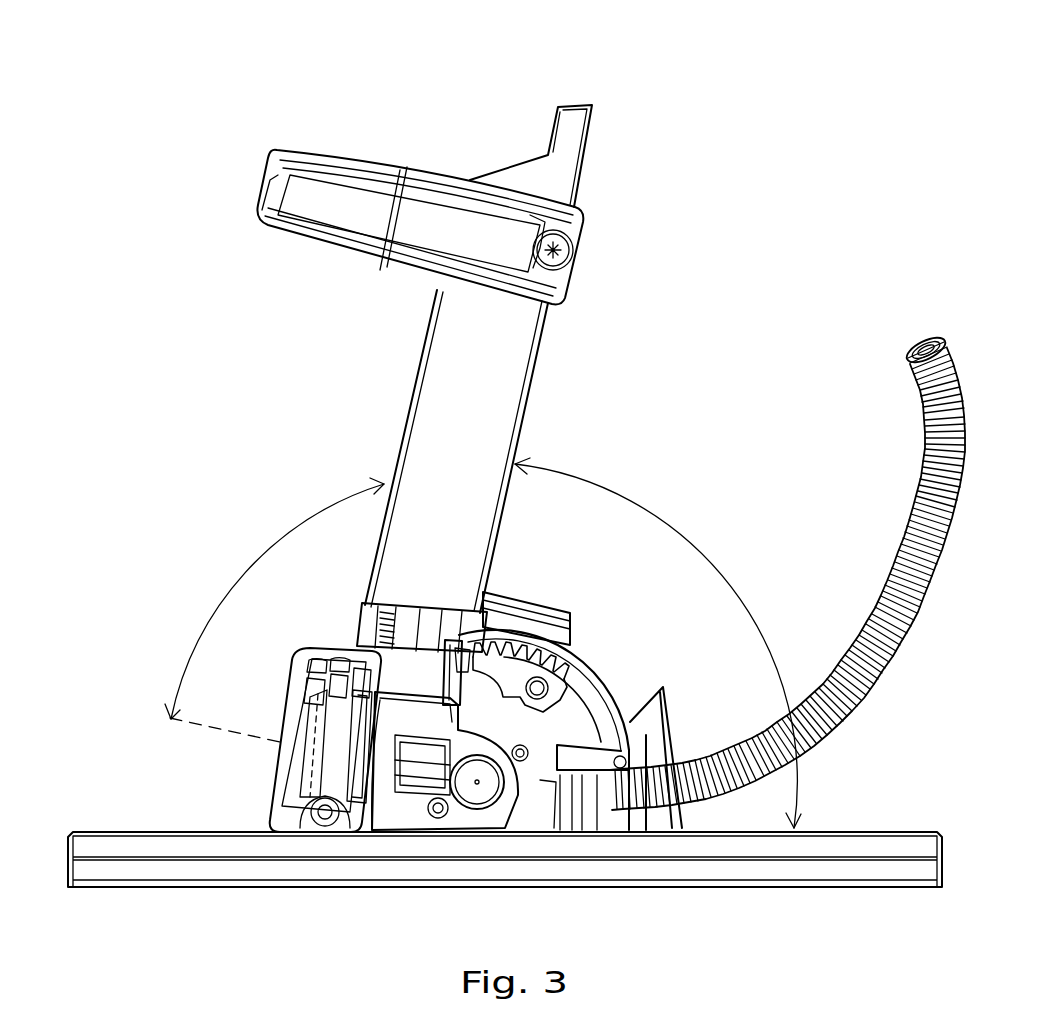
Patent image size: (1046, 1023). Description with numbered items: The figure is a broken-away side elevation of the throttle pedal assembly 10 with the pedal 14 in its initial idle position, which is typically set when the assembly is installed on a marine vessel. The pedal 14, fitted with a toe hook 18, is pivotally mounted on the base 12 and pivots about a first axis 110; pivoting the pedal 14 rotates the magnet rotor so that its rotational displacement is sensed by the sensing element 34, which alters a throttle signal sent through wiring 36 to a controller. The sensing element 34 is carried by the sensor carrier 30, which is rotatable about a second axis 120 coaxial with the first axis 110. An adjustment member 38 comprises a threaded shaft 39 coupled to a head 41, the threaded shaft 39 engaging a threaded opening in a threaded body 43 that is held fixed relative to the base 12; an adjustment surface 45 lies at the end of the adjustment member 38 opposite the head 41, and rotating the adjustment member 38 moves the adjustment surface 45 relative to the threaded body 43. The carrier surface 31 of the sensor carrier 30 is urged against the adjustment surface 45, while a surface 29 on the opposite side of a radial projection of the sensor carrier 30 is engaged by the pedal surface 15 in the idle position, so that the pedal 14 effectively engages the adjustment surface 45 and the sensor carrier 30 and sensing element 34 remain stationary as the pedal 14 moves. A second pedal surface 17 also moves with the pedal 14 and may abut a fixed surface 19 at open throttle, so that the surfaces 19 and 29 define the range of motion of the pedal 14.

The throttle pedal assembly 10 is at (102, 267).
The base 12 is at (130, 828).
The pedal 14 is at (400, 440).
The pedal surface 15 is at (405, 705).
The pedal surface 17 is at (580, 688).
The toe hook 18 is at (365, 155).
The surface 19 is at (552, 745).
The surface of the sensor carrier 29 is at (560, 625).
The sensor carrier 30 is at (468, 805).
The carrier surface 31 is at (390, 668).
The sensing element 34 is at (440, 815).
The wiring 36 is at (918, 332).
The adjustment member 38 is at (393, 617).
The threaded shaft 39 is at (427, 627).
The head 41 is at (360, 660).
The threaded body 43 is at (440, 627).
The adjustment surface 45 is at (457, 660).
The first axis 110 is at (405, 800).
The second axis 120 is at (477, 782).